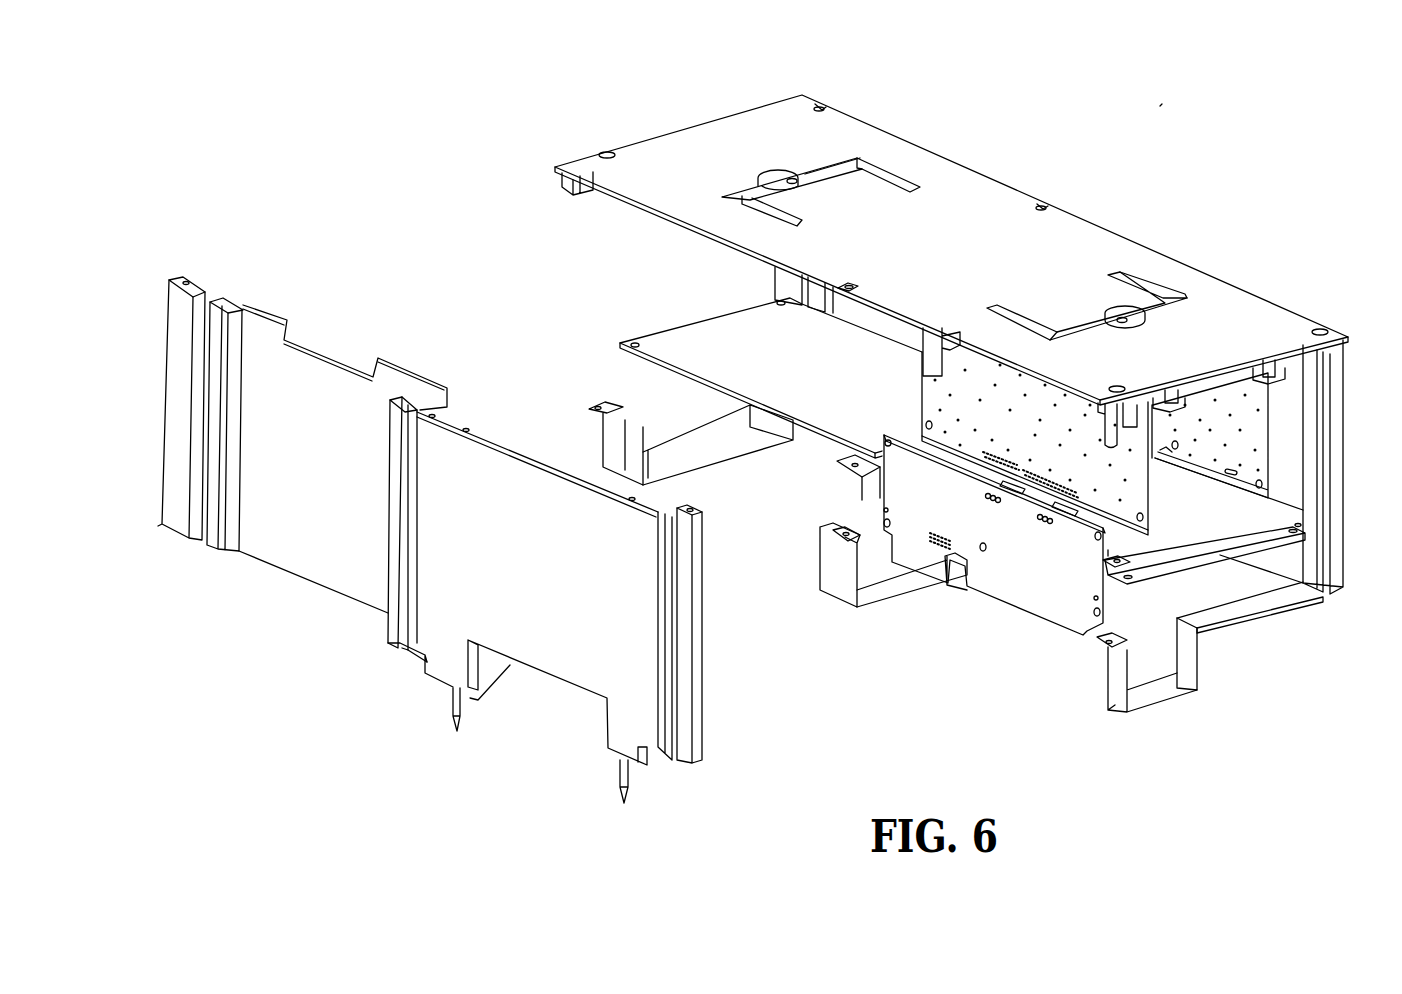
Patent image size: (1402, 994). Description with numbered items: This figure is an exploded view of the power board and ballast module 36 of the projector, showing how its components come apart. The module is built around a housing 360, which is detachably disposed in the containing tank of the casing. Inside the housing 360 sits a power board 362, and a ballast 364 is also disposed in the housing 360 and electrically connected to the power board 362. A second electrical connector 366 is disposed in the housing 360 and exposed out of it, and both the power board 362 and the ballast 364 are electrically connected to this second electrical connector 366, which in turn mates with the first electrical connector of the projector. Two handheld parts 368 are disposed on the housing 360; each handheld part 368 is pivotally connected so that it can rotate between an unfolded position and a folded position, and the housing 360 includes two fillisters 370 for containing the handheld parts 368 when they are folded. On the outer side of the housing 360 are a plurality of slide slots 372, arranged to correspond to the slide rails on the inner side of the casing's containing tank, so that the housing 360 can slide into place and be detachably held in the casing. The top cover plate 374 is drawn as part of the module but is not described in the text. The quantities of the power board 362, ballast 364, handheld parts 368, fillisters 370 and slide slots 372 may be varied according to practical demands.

The power board and ballast module 36 is at (1158, 108).
The housing 360 is at (1370, 337).
The power board 362 is at (697, 340).
The ballast 364 is at (1148, 490).
The second electrical connector 366 is at (1046, 597).
The handheld part 368 is at (792, 180).
The fillister 370 is at (904, 171).
The slide slot 372 is at (186, 342).
The top cover plate 374 is at (1006, 250).